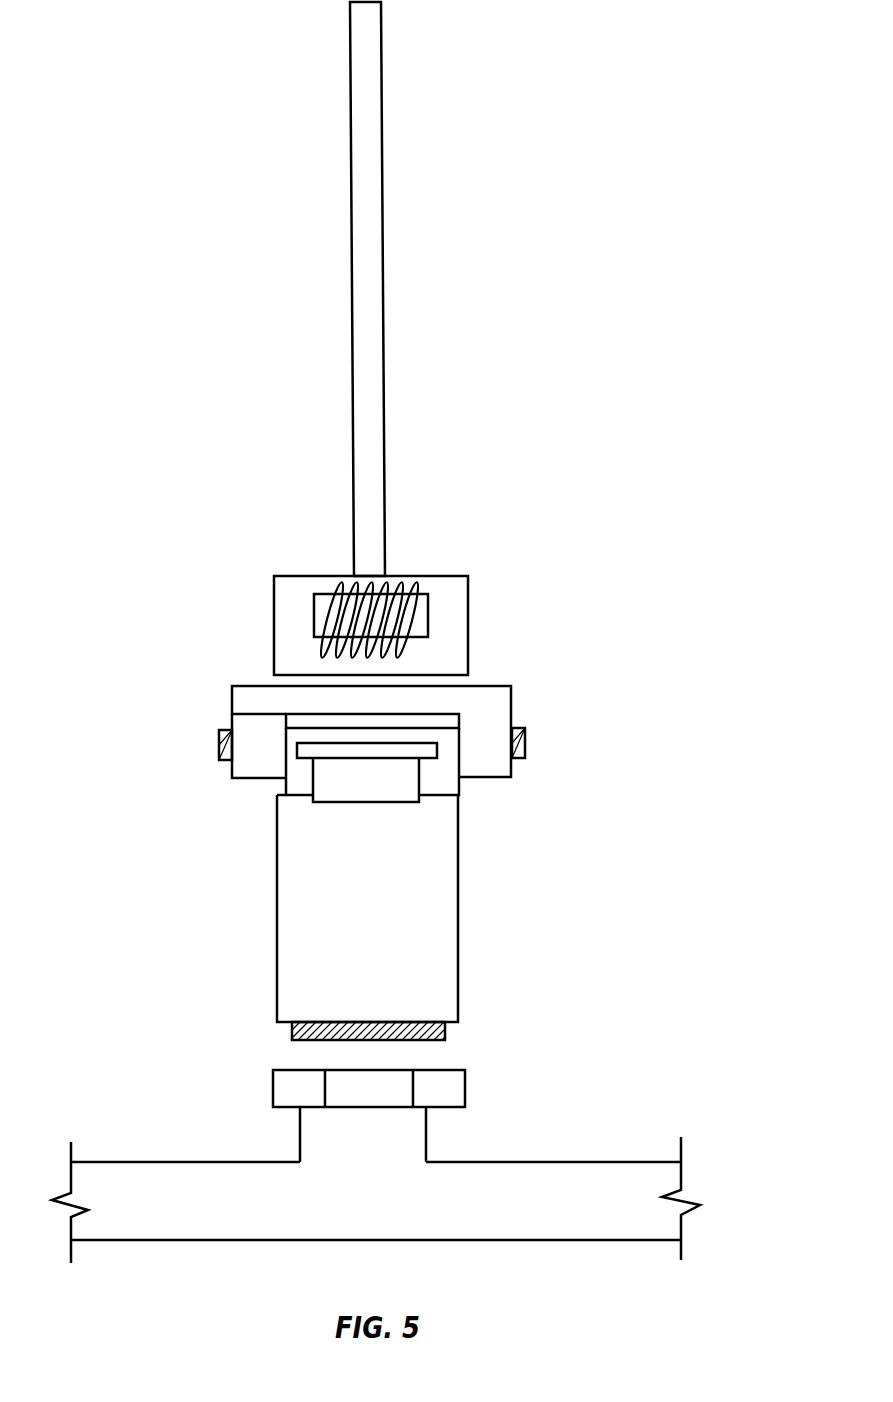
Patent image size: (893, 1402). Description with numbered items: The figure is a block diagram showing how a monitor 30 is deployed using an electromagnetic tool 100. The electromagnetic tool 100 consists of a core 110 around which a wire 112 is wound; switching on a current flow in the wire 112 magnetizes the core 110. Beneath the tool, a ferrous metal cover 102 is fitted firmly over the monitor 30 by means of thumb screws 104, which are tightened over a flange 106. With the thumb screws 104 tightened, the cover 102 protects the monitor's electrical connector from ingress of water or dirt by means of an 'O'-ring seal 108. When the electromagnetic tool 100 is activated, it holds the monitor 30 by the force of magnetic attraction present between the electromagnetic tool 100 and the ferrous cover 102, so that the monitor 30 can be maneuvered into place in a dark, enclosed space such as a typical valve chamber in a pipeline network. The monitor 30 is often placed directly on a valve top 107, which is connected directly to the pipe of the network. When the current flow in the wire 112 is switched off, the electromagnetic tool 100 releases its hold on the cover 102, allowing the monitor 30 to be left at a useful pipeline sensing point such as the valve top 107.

The electromagnetic tool 100 is at (383, 356).
The core 110 is at (427, 615).
The wire 112 is at (313, 600).
The ferrous metal cover 102 is at (512, 713).
The 'O'-ring seal 108 is at (410, 711).
The thumb screws 104 is at (218, 745).
The flange 106 is at (313, 760).
The monitor 30 is at (459, 897).
The valve top 107 is at (466, 1088).